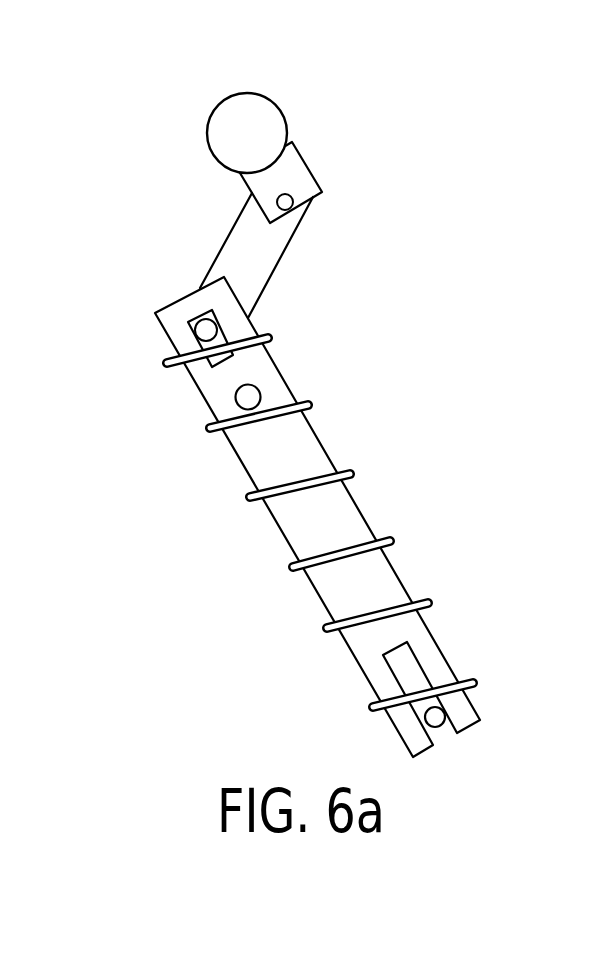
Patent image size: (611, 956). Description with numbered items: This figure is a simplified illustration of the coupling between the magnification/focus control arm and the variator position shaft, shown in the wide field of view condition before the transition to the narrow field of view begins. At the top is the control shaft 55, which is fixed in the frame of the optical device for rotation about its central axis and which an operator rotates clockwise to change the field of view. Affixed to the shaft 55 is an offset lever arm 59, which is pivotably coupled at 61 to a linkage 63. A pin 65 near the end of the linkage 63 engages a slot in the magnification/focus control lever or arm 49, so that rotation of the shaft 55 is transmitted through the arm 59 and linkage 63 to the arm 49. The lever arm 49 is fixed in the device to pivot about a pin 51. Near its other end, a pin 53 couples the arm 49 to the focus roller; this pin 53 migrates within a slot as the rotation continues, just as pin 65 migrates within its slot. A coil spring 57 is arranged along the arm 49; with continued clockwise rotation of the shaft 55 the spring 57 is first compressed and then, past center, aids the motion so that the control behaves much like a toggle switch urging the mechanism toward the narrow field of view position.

The magnification/focus control lever or arm 49 is at (347, 518).
The pin 51 is at (257, 392).
The pin 53 is at (425, 719).
The control shaft 55 is at (277, 106).
The coil spring 57 is at (353, 472).
The offset lever arm 59 is at (283, 175).
The pivot coupling 61 is at (293, 205).
The linkage 63 is at (237, 245).
The pin 65 is at (200, 327).